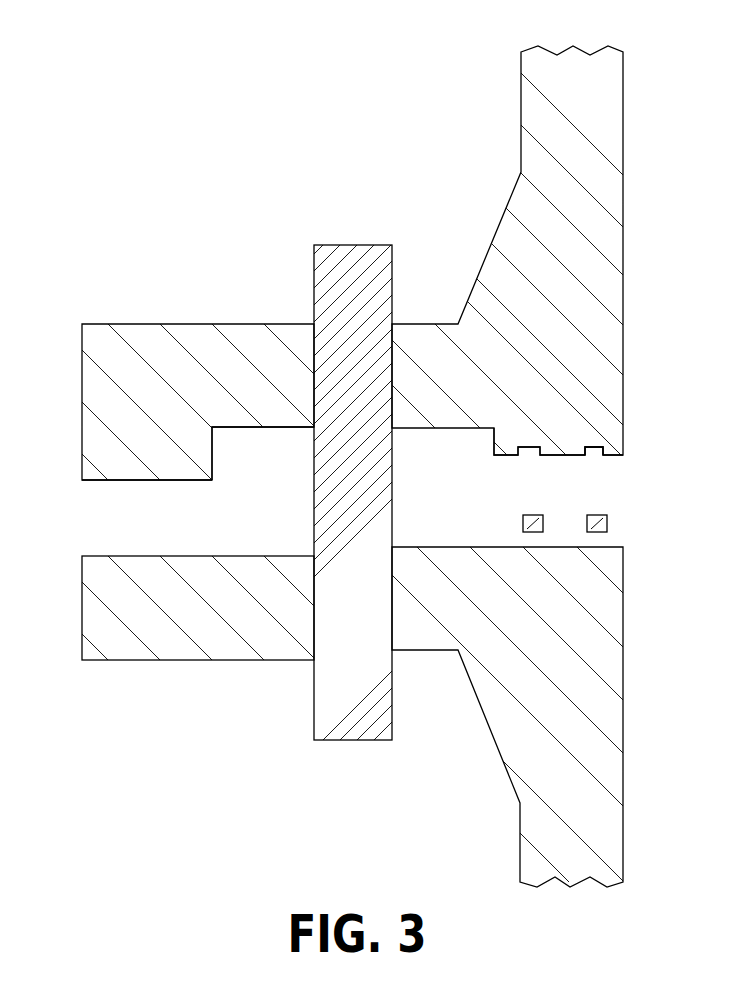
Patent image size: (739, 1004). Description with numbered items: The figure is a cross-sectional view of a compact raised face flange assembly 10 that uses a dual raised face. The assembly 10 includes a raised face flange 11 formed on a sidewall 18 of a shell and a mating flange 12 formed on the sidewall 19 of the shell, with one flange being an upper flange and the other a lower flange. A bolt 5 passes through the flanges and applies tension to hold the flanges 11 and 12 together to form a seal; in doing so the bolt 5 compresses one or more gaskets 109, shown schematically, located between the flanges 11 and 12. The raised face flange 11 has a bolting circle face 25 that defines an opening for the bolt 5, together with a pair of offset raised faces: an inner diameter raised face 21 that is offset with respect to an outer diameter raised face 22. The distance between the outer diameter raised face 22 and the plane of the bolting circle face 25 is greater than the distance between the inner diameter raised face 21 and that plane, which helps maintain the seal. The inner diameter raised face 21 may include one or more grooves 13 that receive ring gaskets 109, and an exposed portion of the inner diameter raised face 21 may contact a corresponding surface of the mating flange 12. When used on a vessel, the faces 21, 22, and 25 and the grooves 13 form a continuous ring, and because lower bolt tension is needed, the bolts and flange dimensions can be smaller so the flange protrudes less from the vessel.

The compact raised face flange assembly 10 is at (219, 88).
The bolt 5 is at (358, 244).
The raised face flange 11 is at (82, 373).
The mating flange 12 is at (82, 609).
The grooves 13 is at (593, 456).
The sidewall 18 is at (521, 110).
The sidewall 19 is at (520, 845).
The inner diameter raised face 21 is at (507, 455).
The outer diameter raised face 22 is at (128, 481).
The bolting circle face 25 is at (259, 428).
The gaskets 109 is at (538, 532).